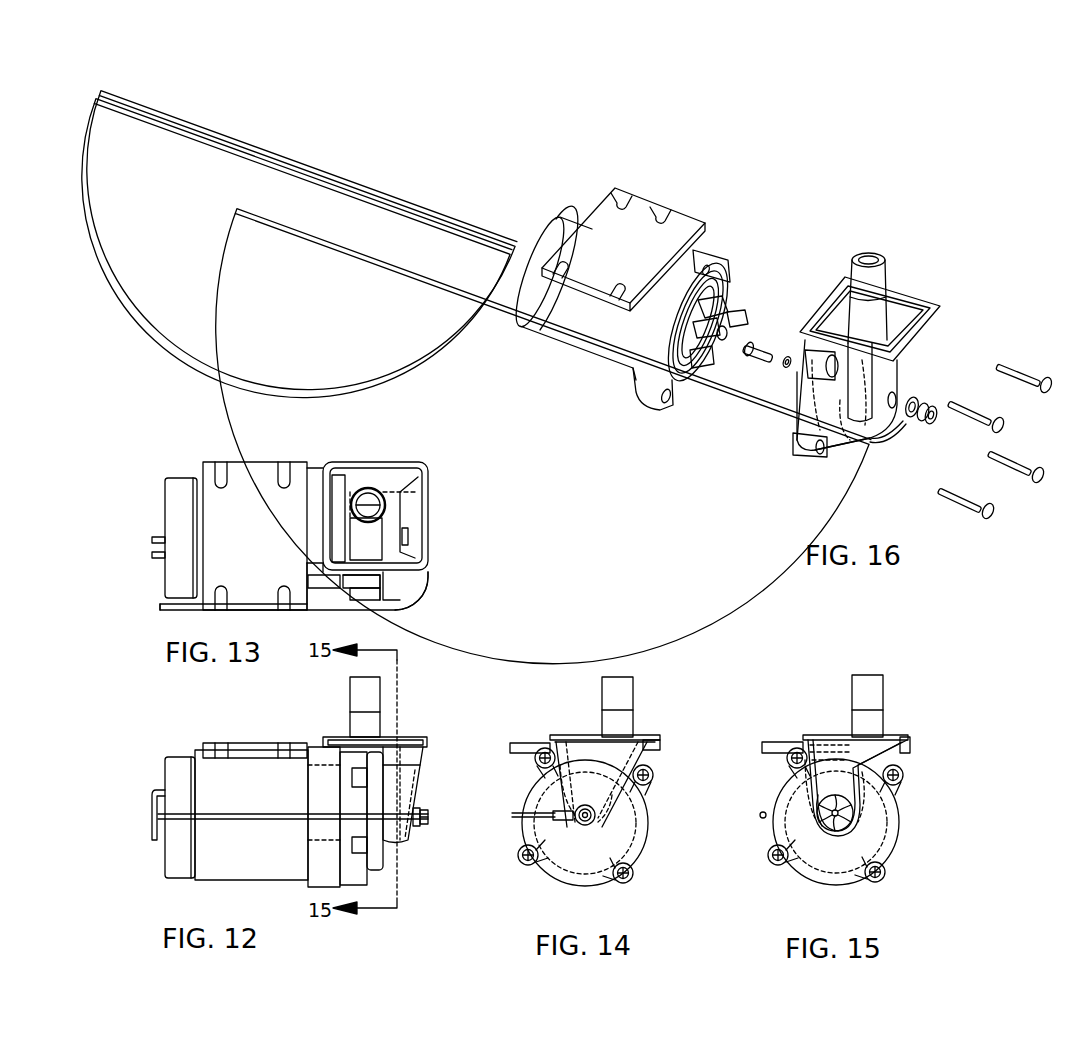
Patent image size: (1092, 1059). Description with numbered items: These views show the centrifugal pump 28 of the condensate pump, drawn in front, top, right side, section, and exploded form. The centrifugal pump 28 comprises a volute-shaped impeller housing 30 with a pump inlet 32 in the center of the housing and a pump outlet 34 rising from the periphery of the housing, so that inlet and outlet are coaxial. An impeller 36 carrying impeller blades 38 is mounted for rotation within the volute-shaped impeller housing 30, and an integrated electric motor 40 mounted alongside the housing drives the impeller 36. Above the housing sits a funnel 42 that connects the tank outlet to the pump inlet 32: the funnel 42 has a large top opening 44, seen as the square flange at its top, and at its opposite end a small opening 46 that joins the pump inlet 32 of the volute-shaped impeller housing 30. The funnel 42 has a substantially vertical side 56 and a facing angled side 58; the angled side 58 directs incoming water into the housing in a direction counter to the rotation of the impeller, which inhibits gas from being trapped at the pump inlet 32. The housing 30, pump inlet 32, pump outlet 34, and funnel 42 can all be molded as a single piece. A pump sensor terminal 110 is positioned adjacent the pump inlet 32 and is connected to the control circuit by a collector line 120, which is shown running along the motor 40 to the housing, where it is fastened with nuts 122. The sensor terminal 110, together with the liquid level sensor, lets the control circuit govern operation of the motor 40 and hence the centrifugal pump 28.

In FIG. 16, the centrifugal pump 28 is at (822, 410).
In FIG. 16, the volute-shaped impeller housing 30 is at (853, 418).
In FIG. 13, the volute-shaped impeller housing 30 is at (370, 582).
In FIG. 12, the volute-shaped impeller housing 30 is at (375, 852).
In FIG. 14, the volute-shaped impeller housing 30 is at (590, 852).
In FIG. 15, the volute-shaped impeller housing 30 is at (875, 838).
In FIG. 15, the pump inlet 32 is at (828, 830).
In FIG. 16, the pump outlet 34 is at (868, 255).
In FIG. 13, the pump outlet 34 is at (360, 492).
In FIG. 12, the pump outlet 34 is at (347, 693).
In FIG. 14, the pump outlet 34 is at (634, 683).
In FIG. 15, the pump outlet 34 is at (884, 688).
In FIG. 16, the impeller 36 is at (728, 342).
In FIG. 15, the impeller 36 is at (843, 830).
In FIG. 16, the impeller blades 38 is at (738, 338).
In FIG. 16, the electric motor 40 is at (550, 238).
In FIG. 13, the electric motor 40 is at (185, 475).
In FIG. 12, the electric motor 40 is at (183, 765).
In FIG. 16, the funnel 42 is at (905, 363).
In FIG. 13, the funnel 42 is at (433, 478).
In FIG. 12, the funnel 42 is at (410, 768).
In FIG. 14, the funnel 42 is at (628, 745).
In FIG. 15, the funnel 42 is at (806, 740).
In FIG. 16, the large top opening 44 is at (912, 303).
In FIG. 13, the large top opening 44 is at (390, 470).
In FIG. 12, the large top opening 44 is at (408, 738).
In FIG. 14, the large top opening 44 is at (572, 733).
In FIG. 15, the large top opening 44 is at (826, 735).
In FIG. 13, the small opening 46 is at (393, 540).
In FIG. 14, the substantially vertical side 56 is at (557, 790).
In FIG. 15, the substantially vertical side 56 is at (812, 792).
In FIG. 14, the facing angled side 58 is at (614, 802).
In FIG. 15, the facing angled side 58 is at (867, 800).
In FIG. 16, the pump sensor terminal 110 is at (781, 343).
In FIG. 13, the pump sensor terminal 110 is at (412, 536).
In FIG. 16, the collector line 120 is at (427, 283).
In FIG. 13, the collector line 120 is at (158, 606).
In FIG. 12, the collector line 120 is at (218, 813).
In FIG. 14, the collector line 120 is at (517, 817).
In FIG. 16, the wire terminal nut 122 is at (927, 422).
In FIG. 12, the wire terminal nut 122 is at (425, 828).
In FIG. 14, the wire terminal nut 122 is at (580, 826).